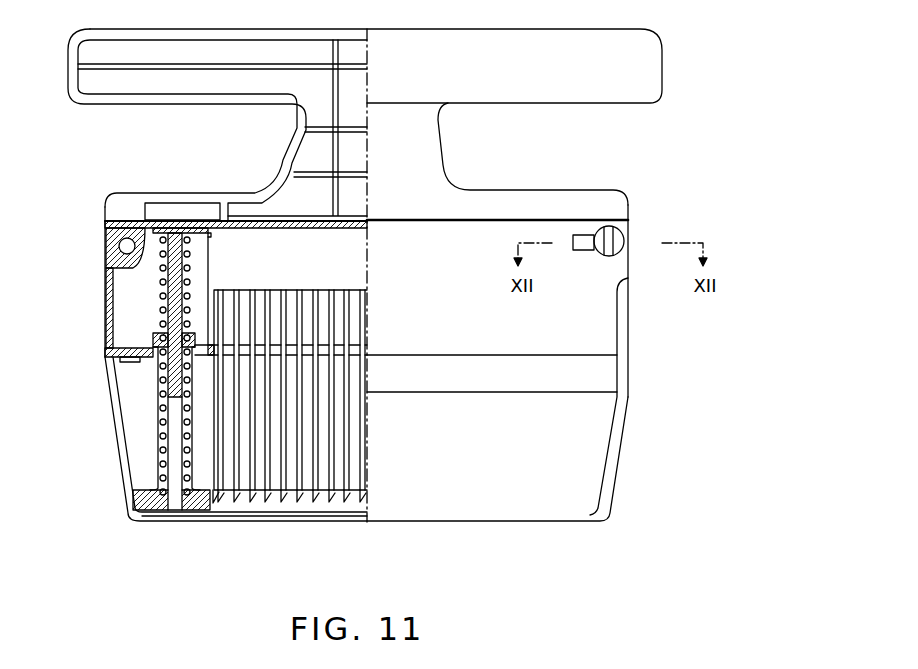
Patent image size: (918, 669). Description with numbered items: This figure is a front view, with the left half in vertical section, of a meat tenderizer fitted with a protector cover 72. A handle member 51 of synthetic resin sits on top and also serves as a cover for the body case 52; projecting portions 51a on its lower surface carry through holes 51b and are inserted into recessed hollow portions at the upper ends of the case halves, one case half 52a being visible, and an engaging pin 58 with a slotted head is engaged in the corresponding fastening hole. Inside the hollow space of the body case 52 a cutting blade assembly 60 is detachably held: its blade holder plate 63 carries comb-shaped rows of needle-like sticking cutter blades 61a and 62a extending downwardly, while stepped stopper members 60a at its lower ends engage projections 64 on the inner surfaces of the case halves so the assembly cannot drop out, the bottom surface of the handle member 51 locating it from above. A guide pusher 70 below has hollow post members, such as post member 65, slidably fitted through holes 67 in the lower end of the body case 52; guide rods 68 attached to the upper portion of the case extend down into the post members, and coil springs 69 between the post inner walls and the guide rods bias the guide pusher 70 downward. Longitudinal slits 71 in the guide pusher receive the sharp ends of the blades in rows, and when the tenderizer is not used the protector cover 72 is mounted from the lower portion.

The handle member 51 is at (622, 30).
The projecting portions 51a is at (112, 231).
The through holes 51b is at (121, 251).
The body case 52 is at (631, 361).
The case half 52a is at (592, 328).
The engaging pin 58 is at (617, 236).
The cutting blade assembly 60 is at (253, 248).
The stopper member 60a is at (192, 400).
The sticking cutter blades 61a is at (235, 497).
The sticking cutter blades 62a is at (333, 497).
The blade holder plate 63 is at (227, 268).
The projections 64 is at (160, 373).
The post member 65 is at (160, 452).
The holes 67 is at (160, 358).
The guide rods 68 is at (140, 250).
The coil springs 69 is at (167, 398).
The guide pusher 70 is at (172, 503).
The longitudinal slits 71 is at (219, 500).
The protector cover 72 is at (130, 521).